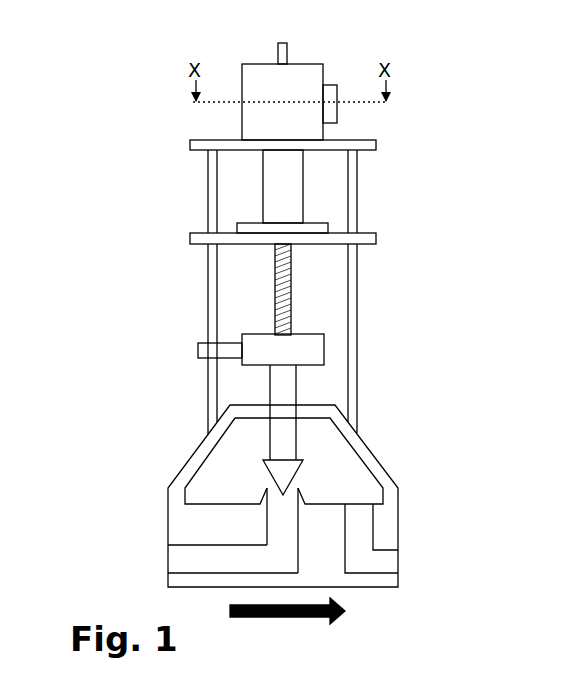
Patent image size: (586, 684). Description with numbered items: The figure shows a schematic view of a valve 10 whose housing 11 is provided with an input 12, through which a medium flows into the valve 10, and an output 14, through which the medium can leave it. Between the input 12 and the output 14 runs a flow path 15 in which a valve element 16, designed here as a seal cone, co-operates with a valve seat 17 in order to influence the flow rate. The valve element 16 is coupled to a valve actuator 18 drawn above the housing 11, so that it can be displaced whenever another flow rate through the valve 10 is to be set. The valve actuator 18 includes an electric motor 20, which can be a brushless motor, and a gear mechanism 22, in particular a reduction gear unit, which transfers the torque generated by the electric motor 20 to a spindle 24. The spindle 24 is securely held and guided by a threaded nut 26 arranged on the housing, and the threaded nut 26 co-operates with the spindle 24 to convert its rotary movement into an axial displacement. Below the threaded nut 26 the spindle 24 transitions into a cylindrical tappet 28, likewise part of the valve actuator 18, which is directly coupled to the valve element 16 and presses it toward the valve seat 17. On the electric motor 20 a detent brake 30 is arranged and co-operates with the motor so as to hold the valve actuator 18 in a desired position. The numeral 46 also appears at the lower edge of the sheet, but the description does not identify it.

The valve 10 is at (122, 75).
The valve actuator 18 is at (457, 132).
The electric motor 20 is at (243, 132).
The detent brake 30 is at (327, 86).
The gear mechanism 22 is at (290, 183).
The spindle 24 is at (283, 283).
The threaded nut 26 is at (288, 347).
The cylindrical tappet 28 is at (285, 385).
The valve element 16 is at (288, 468).
The valve seat 17 is at (303, 497).
The housing 11 is at (185, 473).
The input 12 is at (167, 561).
The output 14 is at (401, 559).
The flow path 15 is at (257, 565).
The component 46 is at (465, 675).